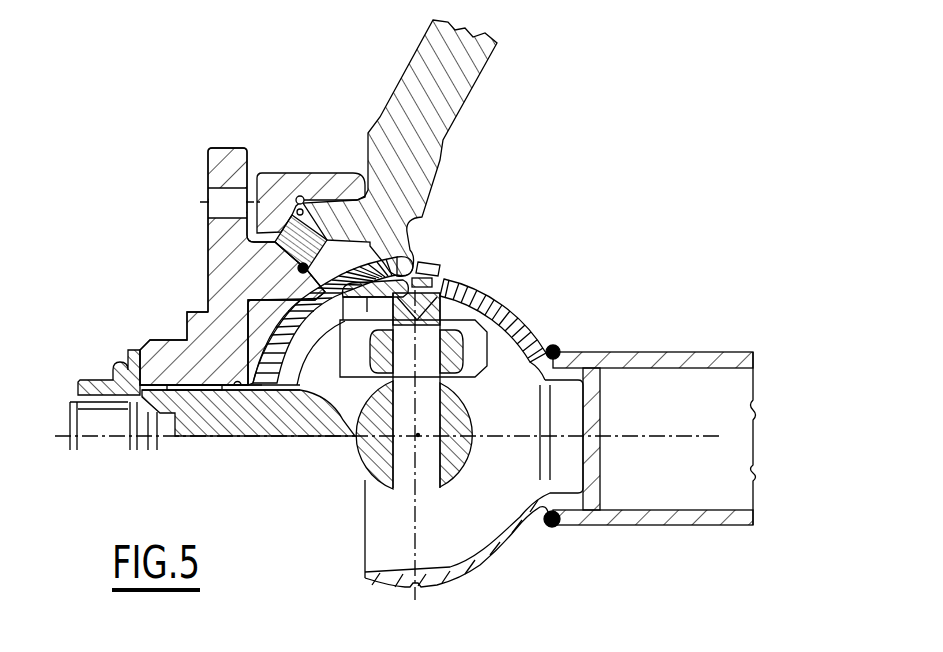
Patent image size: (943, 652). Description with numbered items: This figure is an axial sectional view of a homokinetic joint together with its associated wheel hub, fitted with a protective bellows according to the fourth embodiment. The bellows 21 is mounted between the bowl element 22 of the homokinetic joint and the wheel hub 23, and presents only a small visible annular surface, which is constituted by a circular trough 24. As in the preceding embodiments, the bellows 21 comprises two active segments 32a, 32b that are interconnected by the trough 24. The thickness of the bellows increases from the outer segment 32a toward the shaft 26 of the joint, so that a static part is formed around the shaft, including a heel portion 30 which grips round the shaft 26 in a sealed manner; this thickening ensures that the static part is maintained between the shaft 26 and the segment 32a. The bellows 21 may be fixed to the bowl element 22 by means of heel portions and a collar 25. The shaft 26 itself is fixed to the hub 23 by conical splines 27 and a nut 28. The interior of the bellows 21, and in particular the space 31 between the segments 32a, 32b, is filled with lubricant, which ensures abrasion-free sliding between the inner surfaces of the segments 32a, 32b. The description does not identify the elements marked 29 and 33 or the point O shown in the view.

The bellows 21 is at (267, 325).
The bowl element 22 is at (497, 304).
The wheel hub 23 is at (227, 257).
The circular trough 24 is at (437, 268).
The collar 25 is at (414, 280).
The shaft 26 is at (225, 410).
The conical splines 27 is at (200, 391).
The nut 28 is at (110, 369).
The sealing ring 29 is at (258, 386).
The heel portion 30 is at (255, 380).
The space 31 is at (380, 270).
The outer segment 32a is at (352, 284).
The active segment 32b is at (408, 238).
The pivot pin 33 is at (330, 200).
The ball center O is at (418, 434).